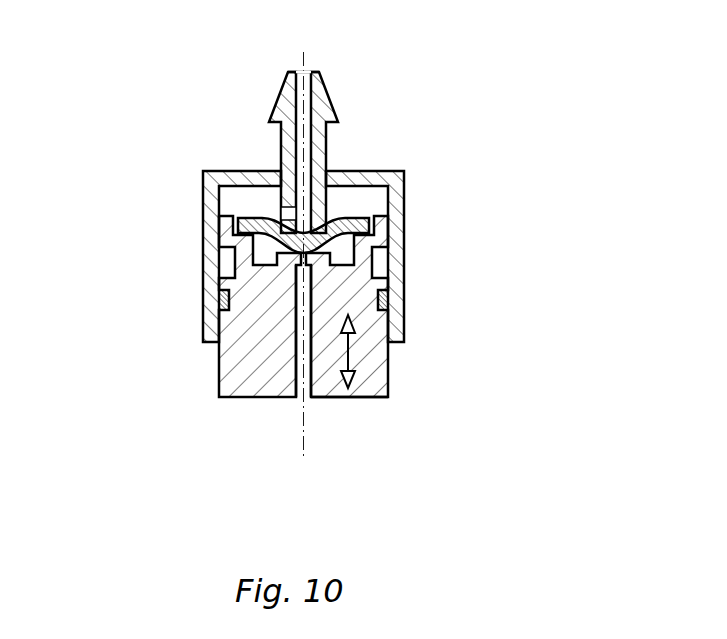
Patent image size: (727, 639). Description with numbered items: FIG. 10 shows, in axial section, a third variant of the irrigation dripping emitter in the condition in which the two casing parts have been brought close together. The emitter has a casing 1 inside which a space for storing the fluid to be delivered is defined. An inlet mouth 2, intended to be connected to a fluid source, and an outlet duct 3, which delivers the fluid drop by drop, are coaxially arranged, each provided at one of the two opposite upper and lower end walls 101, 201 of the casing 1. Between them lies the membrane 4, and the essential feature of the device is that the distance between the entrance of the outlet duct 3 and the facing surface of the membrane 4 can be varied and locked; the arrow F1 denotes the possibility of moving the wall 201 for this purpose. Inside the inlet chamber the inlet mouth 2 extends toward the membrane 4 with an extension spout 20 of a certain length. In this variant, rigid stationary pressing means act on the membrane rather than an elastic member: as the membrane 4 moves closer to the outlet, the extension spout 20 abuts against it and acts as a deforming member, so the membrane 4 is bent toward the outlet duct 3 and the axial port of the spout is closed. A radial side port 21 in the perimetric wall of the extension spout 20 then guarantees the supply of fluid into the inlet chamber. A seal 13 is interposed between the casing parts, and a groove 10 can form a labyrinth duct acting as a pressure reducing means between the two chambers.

The casing 1 is at (202, 332).
The inlet mouth 2 is at (305, 72).
The outlet duct 3 is at (303, 398).
The membrane 4 is at (370, 218).
The groove 10 is at (223, 263).
The seal 13 is at (222, 300).
The extension spout 20 is at (278, 193).
The side port 21 is at (280, 212).
The upper end wall 101 is at (363, 169).
The lower end wall 201 is at (362, 398).
The arrow F1 is at (360, 360).